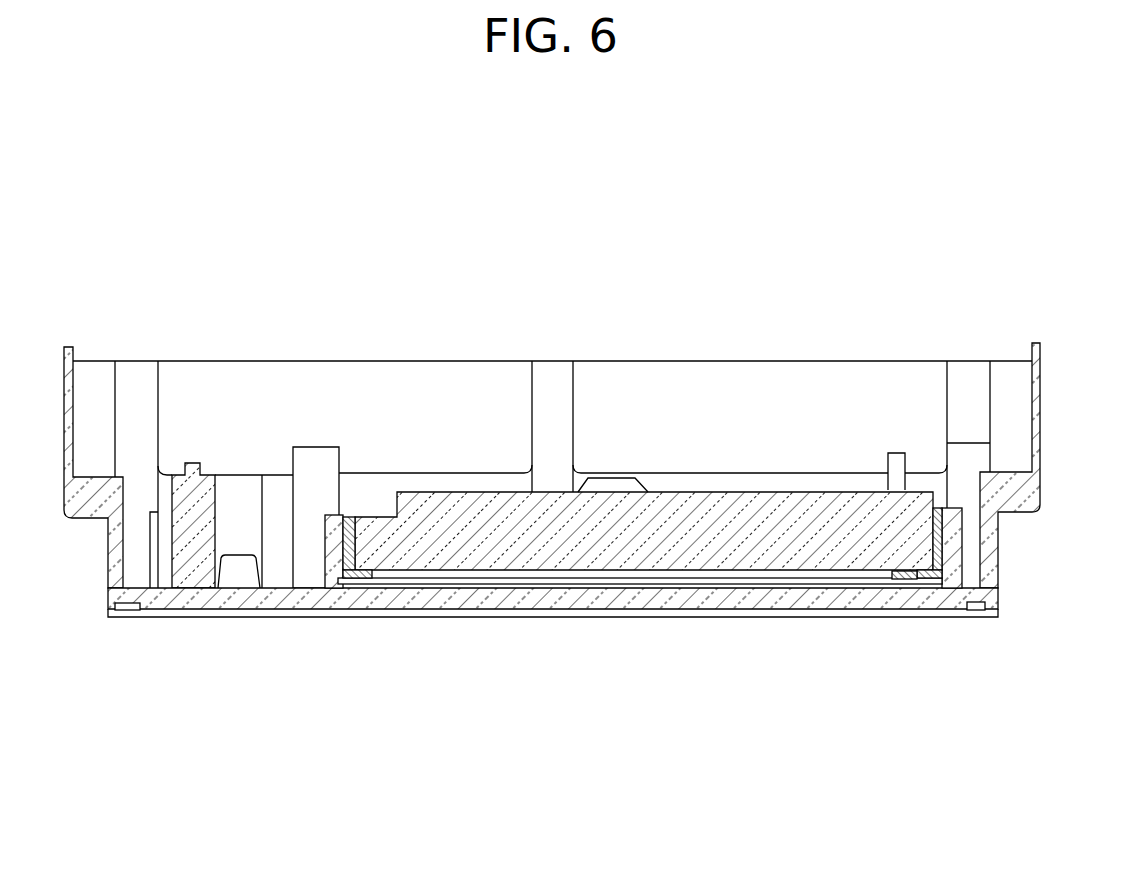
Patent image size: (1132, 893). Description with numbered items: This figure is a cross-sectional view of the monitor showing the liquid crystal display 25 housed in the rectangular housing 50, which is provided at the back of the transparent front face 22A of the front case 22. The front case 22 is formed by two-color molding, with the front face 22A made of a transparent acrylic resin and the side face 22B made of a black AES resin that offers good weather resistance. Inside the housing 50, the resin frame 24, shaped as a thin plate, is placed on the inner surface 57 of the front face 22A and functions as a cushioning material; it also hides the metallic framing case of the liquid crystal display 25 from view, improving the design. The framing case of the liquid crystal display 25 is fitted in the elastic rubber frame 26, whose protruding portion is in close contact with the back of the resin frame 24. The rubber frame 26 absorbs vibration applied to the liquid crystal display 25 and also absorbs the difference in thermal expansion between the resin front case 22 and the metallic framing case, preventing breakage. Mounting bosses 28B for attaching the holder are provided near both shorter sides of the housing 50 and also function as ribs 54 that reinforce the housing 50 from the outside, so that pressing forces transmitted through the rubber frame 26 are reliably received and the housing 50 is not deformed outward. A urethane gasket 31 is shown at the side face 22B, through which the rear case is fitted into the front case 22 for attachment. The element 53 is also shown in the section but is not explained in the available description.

The front case 22 is at (591, 456).
The front face 22A is at (603, 605).
The side face 22B is at (1040, 405).
The resin frame 24 is at (397, 584).
The liquid crystal display 25 is at (720, 502).
The rubber frame 26 is at (907, 585).
The mounting boss 28B is at (632, 480).
The gasket 31 is at (93, 477).
The housing 50 is at (643, 549).
The holding member 53 is at (933, 515).
The rib 54 is at (313, 453).
The inner surface 57 is at (817, 584).